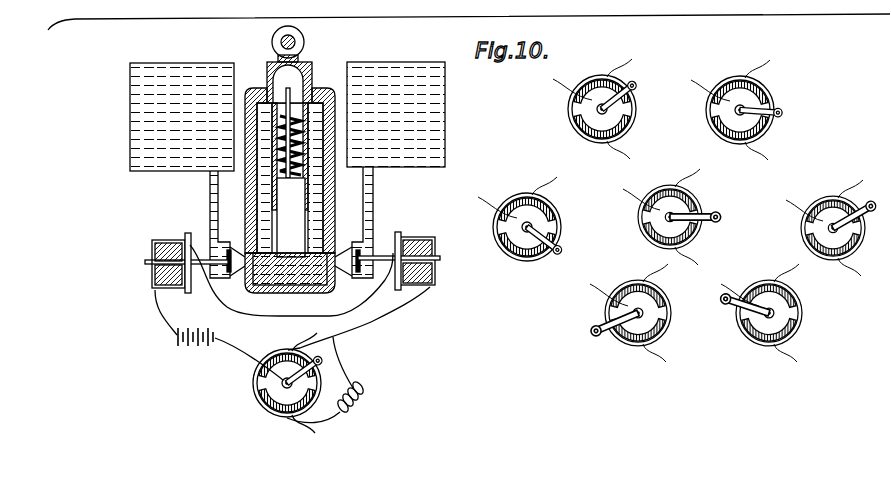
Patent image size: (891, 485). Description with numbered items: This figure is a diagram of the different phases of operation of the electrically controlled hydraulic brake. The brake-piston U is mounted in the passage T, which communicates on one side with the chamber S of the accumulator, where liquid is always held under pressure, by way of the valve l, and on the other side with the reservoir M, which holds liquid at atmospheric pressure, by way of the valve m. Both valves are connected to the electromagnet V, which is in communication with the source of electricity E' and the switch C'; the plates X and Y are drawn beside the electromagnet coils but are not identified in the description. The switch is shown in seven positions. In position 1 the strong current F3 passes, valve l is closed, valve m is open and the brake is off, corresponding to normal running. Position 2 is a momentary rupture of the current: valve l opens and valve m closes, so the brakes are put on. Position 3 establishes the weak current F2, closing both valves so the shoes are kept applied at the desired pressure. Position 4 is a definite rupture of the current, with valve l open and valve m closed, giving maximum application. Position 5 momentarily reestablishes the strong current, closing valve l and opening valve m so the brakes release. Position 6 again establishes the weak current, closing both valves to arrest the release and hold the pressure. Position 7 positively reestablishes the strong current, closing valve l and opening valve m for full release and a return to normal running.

The chamber of the accumulator S is at (182, 117).
The reservoir M is at (396, 114).
The brake-piston U is at (294, 44).
The passage T is at (290, 273).
The valve l is at (236, 261).
The valve m is at (347, 261).
The electromagnet V is at (293, 254).
The left armature plate X is at (193, 258).
The right armature plate Y is at (392, 255).
The source of electricity E' is at (195, 328).
The switch C' is at (280, 383).
The strong current F3 is at (296, 355).
The weak current F2 is at (296, 411).
The position of normal running 1 is at (602, 109).
The position of momentary rupture of the current 2 is at (743, 110).
The position of establishment of the weak current 3 is at (526, 219).
The position of definite rupture of the current 4 is at (680, 217).
The position of momentary reestablishment of the strong current 5 is at (834, 228).
The position of establishment of the weak current 6 is at (637, 313).
The position of positive reestablishment of the strong current 7 is at (768, 313).